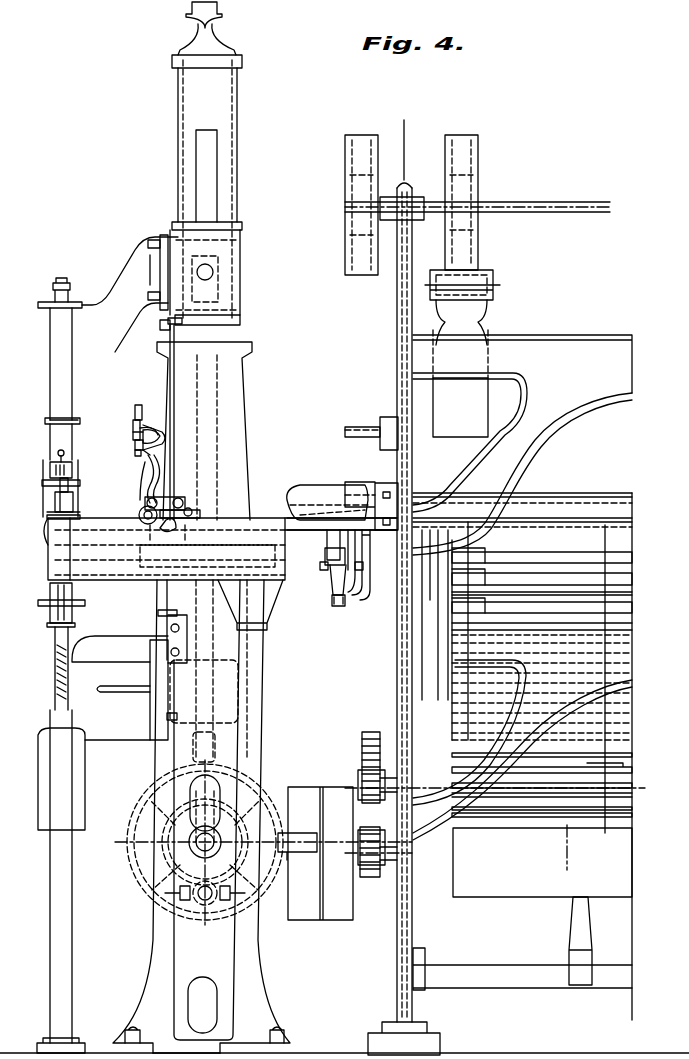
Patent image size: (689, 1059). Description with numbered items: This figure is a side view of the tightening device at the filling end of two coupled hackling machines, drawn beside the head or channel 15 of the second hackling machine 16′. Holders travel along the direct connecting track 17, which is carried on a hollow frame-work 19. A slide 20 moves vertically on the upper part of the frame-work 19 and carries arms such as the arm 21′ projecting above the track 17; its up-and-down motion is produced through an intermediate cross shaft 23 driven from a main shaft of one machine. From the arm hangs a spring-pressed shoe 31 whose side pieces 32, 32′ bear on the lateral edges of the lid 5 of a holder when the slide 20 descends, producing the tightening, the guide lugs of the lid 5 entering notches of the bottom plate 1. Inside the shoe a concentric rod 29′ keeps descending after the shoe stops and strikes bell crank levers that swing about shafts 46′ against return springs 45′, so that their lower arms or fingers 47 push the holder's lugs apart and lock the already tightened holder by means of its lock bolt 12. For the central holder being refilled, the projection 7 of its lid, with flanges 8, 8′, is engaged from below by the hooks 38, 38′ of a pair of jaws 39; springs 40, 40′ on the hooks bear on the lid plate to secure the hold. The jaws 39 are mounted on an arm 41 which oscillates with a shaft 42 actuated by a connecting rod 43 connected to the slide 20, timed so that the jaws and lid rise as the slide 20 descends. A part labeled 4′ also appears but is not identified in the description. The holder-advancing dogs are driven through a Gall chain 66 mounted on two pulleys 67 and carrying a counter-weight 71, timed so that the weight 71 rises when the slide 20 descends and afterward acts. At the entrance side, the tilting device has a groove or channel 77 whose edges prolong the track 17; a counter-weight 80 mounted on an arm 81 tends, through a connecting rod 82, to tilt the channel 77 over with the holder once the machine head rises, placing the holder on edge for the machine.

The bottom plate 1 is at (48, 530).
The lid 5 is at (46, 518).
The projection 7 is at (163, 435).
The flange 8 is at (160, 428).
The flange 8′ is at (150, 450).
The lock bolt 12 is at (133, 432).
The head or channel 15 is at (553, 503).
The hackling machine 16′ is at (408, 587).
The direct connecting track 17 is at (220, 574).
The hollow frame-work 19 is at (155, 675).
The slide 20 is at (240, 300).
The arm 21′ is at (110, 293).
The intermediate cross shaft 23 is at (200, 846).
The rod 29′ is at (50, 466).
The shoe 31 is at (58, 453).
The side piece 32 is at (55, 498).
The side piece 32′ is at (73, 496).
The hook 38 is at (140, 478).
The hook 38′ is at (136, 420).
The pair of jaws 39 is at (148, 428).
The spring 40 is at (135, 410).
The spring 40′ is at (136, 456).
The arm 41 is at (157, 478).
The shaft 42 is at (140, 507).
The connecting rod 43 is at (169, 367).
The arm 4′ is at (135, 447).
The return spring 45′ is at (58, 450).
The shaft 46′ is at (42, 483).
The lower arm or finger 47 is at (46, 512).
The Gall chain 66 is at (65, 662).
The pulley 67 is at (76, 618).
The counter-weight 71 is at (86, 775).
The groove 77 is at (318, 531).
The counter-weight 80 is at (333, 585).
The arm 81 is at (340, 606).
The connecting rod 82 is at (332, 560).